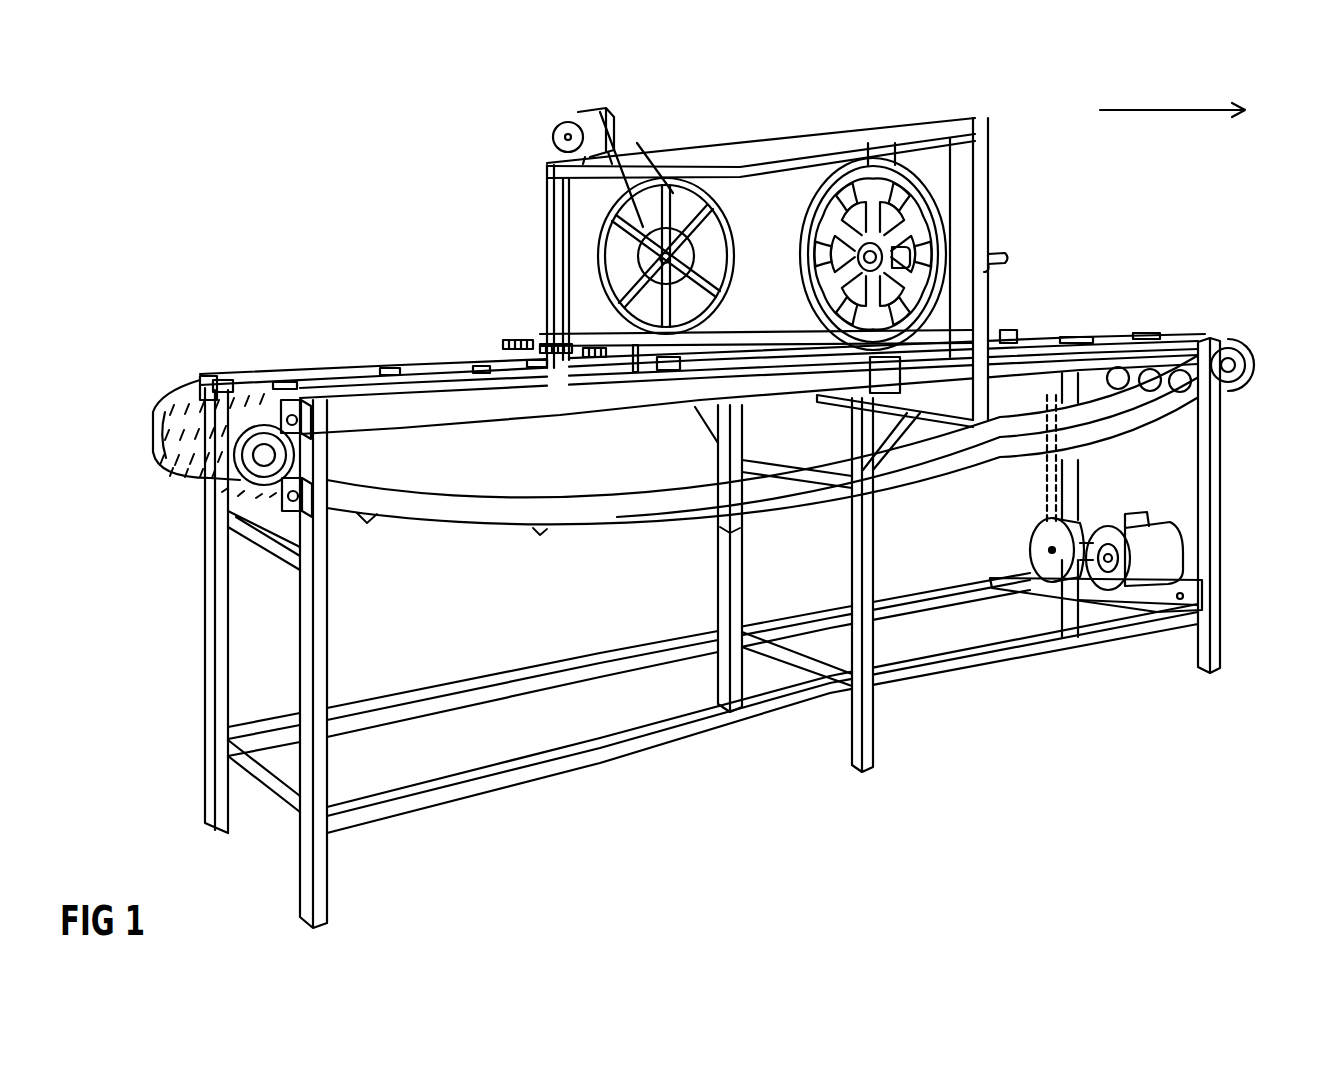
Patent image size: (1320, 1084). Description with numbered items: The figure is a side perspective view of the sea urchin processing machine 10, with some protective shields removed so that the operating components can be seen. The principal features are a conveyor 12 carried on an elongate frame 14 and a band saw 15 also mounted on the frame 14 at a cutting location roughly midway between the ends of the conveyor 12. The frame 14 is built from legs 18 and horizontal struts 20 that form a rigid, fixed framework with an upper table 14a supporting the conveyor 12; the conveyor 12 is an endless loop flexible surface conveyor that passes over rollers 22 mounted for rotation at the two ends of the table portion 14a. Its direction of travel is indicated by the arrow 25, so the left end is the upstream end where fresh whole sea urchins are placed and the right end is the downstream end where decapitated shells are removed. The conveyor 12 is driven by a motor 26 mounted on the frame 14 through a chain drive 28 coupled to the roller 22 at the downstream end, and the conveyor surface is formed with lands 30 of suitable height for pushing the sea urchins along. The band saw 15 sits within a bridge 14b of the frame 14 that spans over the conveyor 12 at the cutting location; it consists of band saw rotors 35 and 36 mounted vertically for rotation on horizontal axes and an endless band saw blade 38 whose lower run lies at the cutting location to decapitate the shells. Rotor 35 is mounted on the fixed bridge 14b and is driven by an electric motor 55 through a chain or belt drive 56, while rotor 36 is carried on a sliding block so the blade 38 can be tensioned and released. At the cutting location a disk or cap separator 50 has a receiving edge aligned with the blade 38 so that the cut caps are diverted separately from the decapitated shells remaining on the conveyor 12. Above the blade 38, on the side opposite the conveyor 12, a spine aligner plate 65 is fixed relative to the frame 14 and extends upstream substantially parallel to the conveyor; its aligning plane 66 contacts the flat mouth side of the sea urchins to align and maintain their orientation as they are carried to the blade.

The sea urchin processing machine 10 is at (1210, 198).
The conveyor 12 is at (172, 398).
The elongate frame 14 is at (915, 704).
The upper table 14a is at (375, 353).
The bridge 14b is at (988, 168).
The band saw 15 is at (859, 122).
The legs 18 is at (205, 672).
The horizontal struts 20 is at (272, 556).
The rollers 22 is at (252, 480).
The arrow 25 is at (1172, 92).
The motor 26 is at (1135, 512).
The chain drive 28 is at (1062, 490).
The lands 30 is at (283, 385).
The band saw rotor 35 is at (730, 297).
The band saw rotor 36 is at (806, 248).
The endless band saw blade 38 is at (778, 172).
The disk or cap separator 50 is at (1008, 326).
The electric motor 55 is at (566, 128).
The chain drive or belt drive 56 is at (627, 150).
The spine aligner plate 65 is at (590, 333).
The aligning surface or plane 66 is at (510, 352).